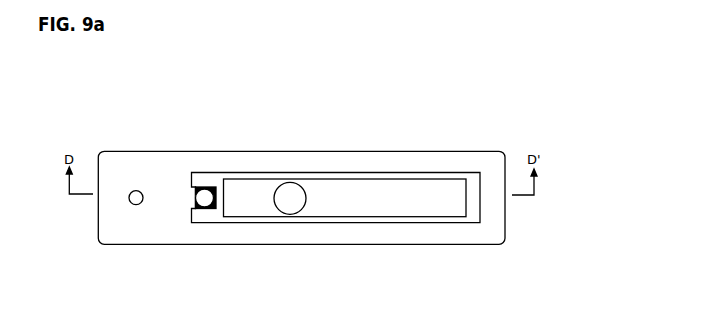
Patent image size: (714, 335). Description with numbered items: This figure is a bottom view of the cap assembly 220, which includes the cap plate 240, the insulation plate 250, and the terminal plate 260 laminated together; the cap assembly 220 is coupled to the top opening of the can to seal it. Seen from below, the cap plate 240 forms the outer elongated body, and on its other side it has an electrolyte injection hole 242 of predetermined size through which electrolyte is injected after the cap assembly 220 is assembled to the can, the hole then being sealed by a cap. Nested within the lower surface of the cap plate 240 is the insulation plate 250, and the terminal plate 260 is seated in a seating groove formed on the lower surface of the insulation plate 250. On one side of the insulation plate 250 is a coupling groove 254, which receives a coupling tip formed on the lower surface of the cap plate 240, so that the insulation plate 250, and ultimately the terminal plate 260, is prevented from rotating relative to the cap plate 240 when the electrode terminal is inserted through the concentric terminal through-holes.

The cap assembly 220 is at (487, 127).
The cap plate 240 is at (457, 160).
The electrolyte injection hole 242 is at (136, 190).
The insulation plate 250 is at (473, 208).
The coupling groove 254 is at (188, 201).
The terminal plate 260 is at (400, 208).